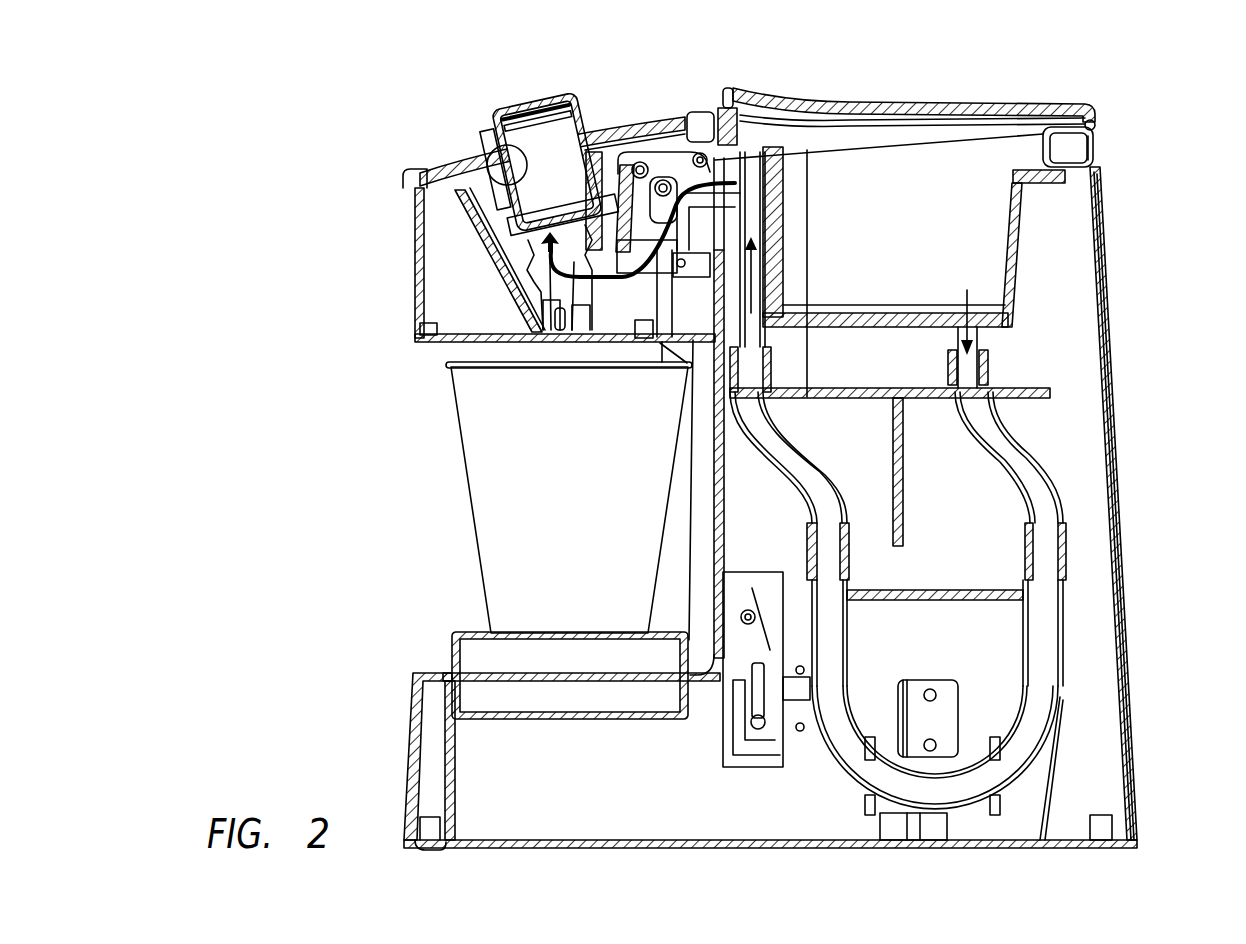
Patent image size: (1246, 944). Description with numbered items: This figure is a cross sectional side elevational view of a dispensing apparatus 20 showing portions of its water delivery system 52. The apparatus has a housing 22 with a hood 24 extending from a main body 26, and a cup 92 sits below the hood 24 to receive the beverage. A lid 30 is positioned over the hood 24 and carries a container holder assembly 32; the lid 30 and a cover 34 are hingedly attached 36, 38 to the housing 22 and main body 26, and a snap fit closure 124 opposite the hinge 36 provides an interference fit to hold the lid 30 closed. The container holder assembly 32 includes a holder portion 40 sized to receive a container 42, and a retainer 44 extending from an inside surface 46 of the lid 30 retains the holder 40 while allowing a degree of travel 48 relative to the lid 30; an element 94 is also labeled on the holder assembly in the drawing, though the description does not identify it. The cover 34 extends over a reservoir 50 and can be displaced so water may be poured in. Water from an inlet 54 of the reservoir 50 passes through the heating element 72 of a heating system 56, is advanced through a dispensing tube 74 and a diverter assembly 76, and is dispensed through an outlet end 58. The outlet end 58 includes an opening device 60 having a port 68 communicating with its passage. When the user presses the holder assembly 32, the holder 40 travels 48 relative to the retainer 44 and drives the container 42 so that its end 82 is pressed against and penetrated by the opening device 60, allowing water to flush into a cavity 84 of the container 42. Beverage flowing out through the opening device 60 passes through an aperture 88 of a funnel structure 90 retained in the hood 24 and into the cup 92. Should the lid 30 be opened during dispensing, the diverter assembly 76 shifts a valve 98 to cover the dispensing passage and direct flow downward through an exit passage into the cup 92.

The dispensing apparatus 20 is at (265, 128).
The housing 22 is at (1150, 320).
The hood 24 is at (415, 212).
The main body 26 is at (1122, 498).
The lid 30 is at (655, 110).
The container holder assembly 32 is at (492, 94).
The cover 34 is at (912, 105).
The hinge 36 is at (725, 86).
The hinge 38 is at (1098, 127).
The holder portion 40 is at (550, 93).
The container 42 is at (500, 168).
The retainer 44 is at (482, 142).
The inside surface 46 is at (450, 232).
The travel 48 is at (612, 160).
The reservoir 50 is at (867, 173).
The water delivery system 52 is at (1050, 133).
The inlet 54 is at (960, 327).
The heating system 56 is at (1098, 658).
The outlet end 58 is at (540, 322).
The opening device 60 is at (530, 252).
The port 68 is at (566, 345).
The heating element 72 is at (747, 318).
The dispensing tube 74 is at (830, 620).
The diverter assembly 76 is at (700, 126).
The end of the container 82 is at (540, 305).
The cavity 84 is at (505, 172).
The aperture 88 is at (530, 340).
The funnel structure 90 is at (580, 274).
The cup 92 is at (483, 597).
The motor cap 94 is at (545, 155).
The valve 98 is at (663, 227).
The snap fit closure 124 is at (410, 174).